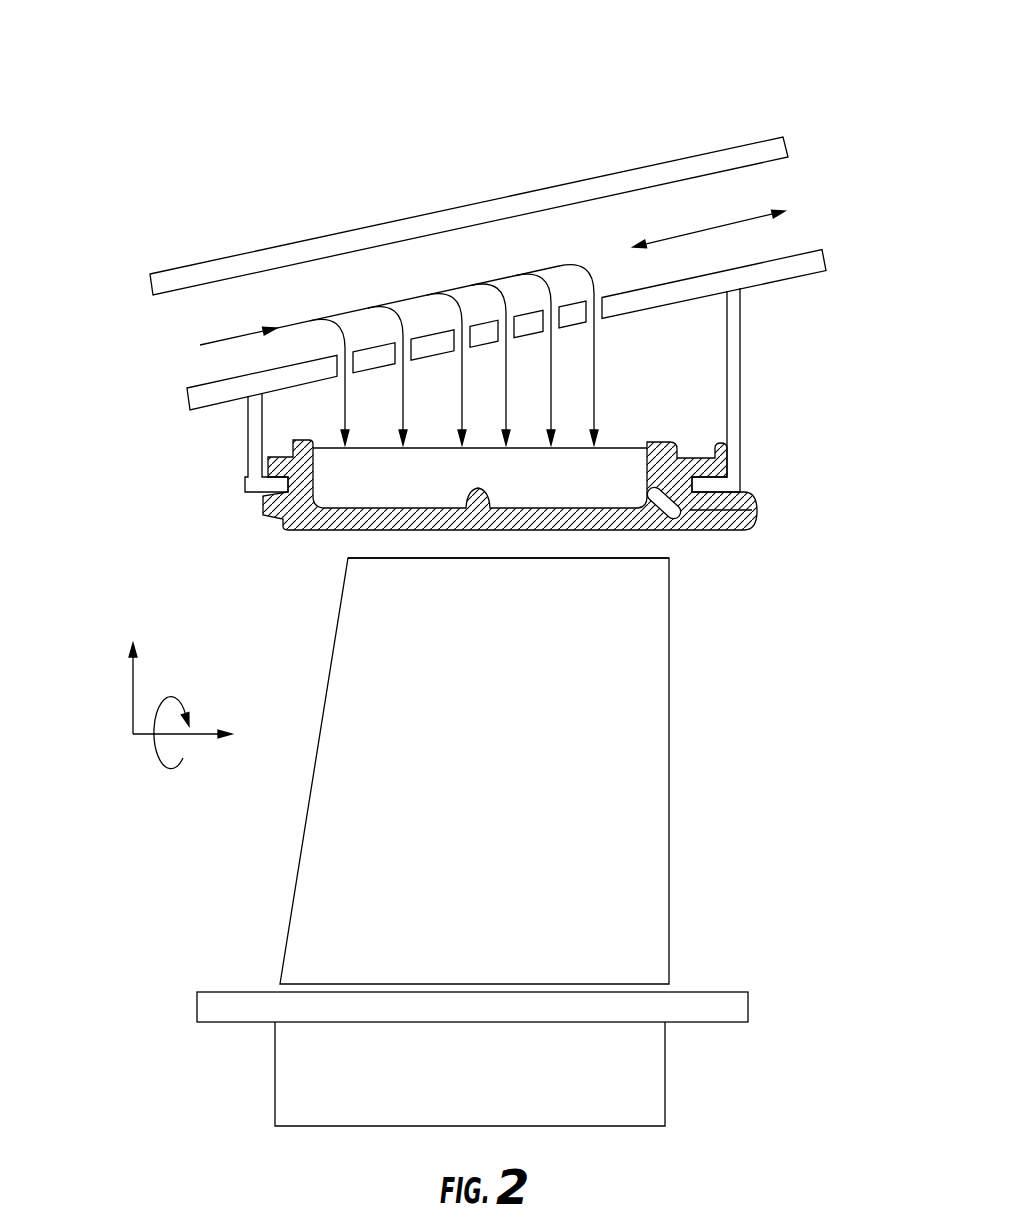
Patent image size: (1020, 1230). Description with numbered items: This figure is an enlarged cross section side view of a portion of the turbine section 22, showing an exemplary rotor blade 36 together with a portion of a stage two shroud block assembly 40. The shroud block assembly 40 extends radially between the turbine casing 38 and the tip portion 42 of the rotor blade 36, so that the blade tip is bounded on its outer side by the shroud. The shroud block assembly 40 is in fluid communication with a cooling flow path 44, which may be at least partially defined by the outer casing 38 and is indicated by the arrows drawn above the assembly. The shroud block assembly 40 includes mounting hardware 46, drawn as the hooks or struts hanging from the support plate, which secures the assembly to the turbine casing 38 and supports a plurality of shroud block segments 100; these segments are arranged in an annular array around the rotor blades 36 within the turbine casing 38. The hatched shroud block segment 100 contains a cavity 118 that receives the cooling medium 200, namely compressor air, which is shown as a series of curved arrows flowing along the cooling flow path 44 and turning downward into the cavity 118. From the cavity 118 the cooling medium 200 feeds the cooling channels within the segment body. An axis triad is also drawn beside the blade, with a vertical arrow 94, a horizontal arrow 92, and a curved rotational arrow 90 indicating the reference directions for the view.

The turbine section 22 is at (663, 70).
The turbine casing 38 is at (387, 222).
The cooling flow path 44 is at (683, 232).
The stage two shroud block assembly 40 is at (770, 428).
The mounting hardware 46 is at (247, 423).
The cooling medium 200 is at (333, 313).
The shroud block segment 100 is at (303, 548).
The cavity 118 is at (613, 465).
The rotor blade 36 is at (506, 788).
The tip portion 42 is at (671, 557).
The radial axis 94 is at (133, 688).
The axial axis 92 is at (197, 730).
The circumferential direction 90 is at (157, 755).